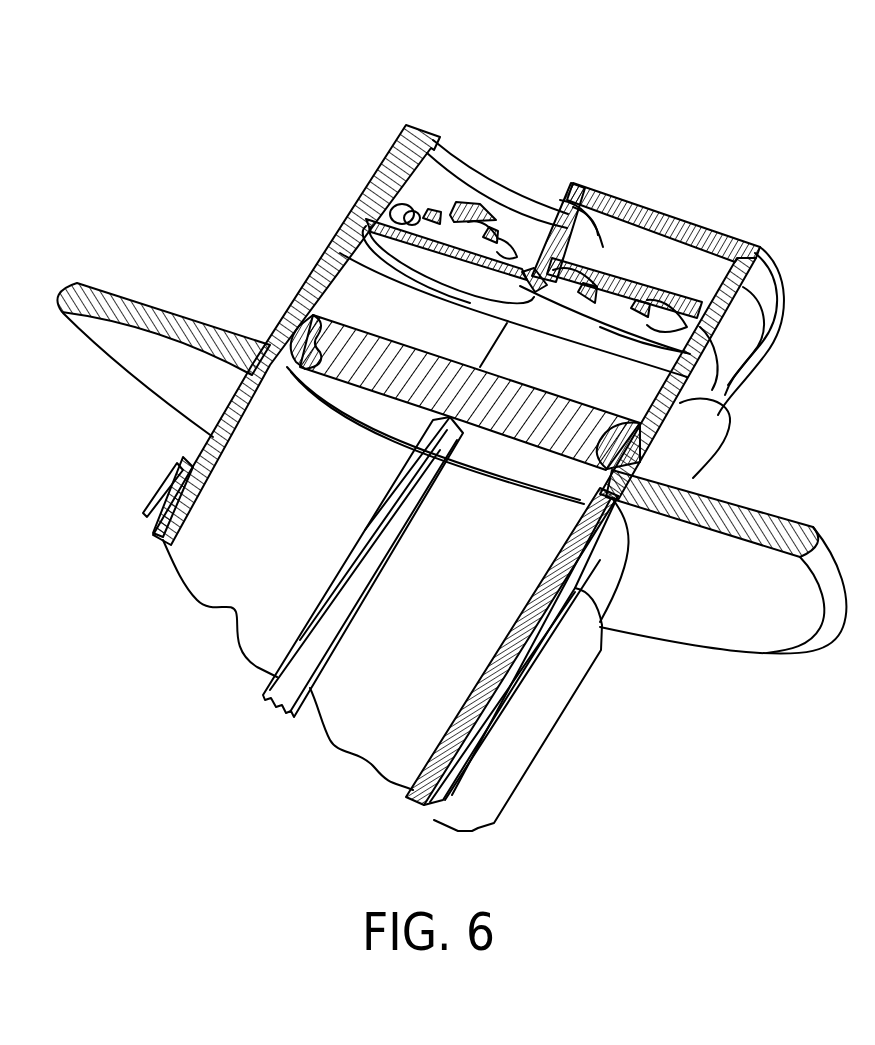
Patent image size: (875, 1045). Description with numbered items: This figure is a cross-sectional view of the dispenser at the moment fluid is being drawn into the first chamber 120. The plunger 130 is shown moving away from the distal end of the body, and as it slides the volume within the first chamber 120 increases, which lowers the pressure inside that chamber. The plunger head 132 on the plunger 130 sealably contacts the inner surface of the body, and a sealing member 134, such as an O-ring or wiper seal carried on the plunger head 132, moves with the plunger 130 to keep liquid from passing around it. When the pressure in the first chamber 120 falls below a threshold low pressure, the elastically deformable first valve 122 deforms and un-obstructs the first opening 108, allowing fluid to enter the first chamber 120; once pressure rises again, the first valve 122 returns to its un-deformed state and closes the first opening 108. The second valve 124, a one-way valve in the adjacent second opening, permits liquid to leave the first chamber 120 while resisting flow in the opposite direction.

The first opening 108 is at (528, 183).
The first chamber 120 is at (388, 303).
The first valve 122 is at (463, 221).
The second valve 124 is at (627, 283).
The plunger 130 is at (277, 677).
The plunger head 132 is at (588, 424).
The sealing member 134 is at (640, 430).